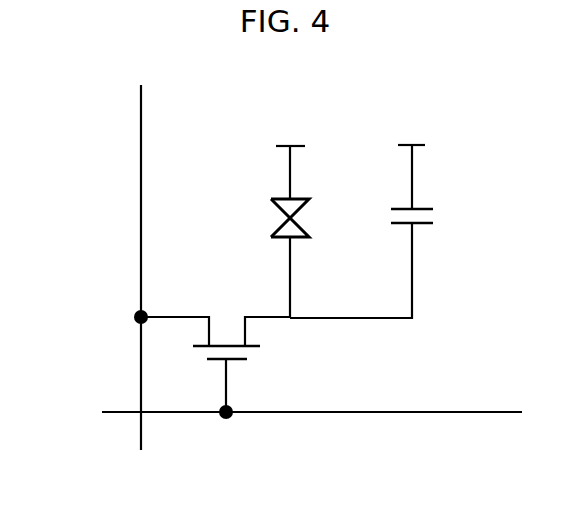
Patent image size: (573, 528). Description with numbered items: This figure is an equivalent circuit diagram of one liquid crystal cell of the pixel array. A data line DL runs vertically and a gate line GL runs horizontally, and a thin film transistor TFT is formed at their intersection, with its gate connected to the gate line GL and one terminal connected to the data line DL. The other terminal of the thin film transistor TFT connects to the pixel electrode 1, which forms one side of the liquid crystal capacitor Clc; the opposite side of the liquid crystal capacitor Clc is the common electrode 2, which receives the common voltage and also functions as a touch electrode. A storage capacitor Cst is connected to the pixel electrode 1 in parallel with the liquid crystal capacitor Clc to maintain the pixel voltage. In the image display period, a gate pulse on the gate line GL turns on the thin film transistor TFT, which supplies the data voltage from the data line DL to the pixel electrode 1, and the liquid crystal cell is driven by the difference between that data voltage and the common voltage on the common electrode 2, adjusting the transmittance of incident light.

The pixel electrode 1 is at (277, 227).
The common electrode 2 is at (281, 198).
The data line DL is at (140, 154).
The gate line GL is at (417, 413).
The thin film transistor TFT is at (226, 364).
The liquid crystal capacitor Clc is at (280, 216).
The storage capacitor Cst is at (384, 231).